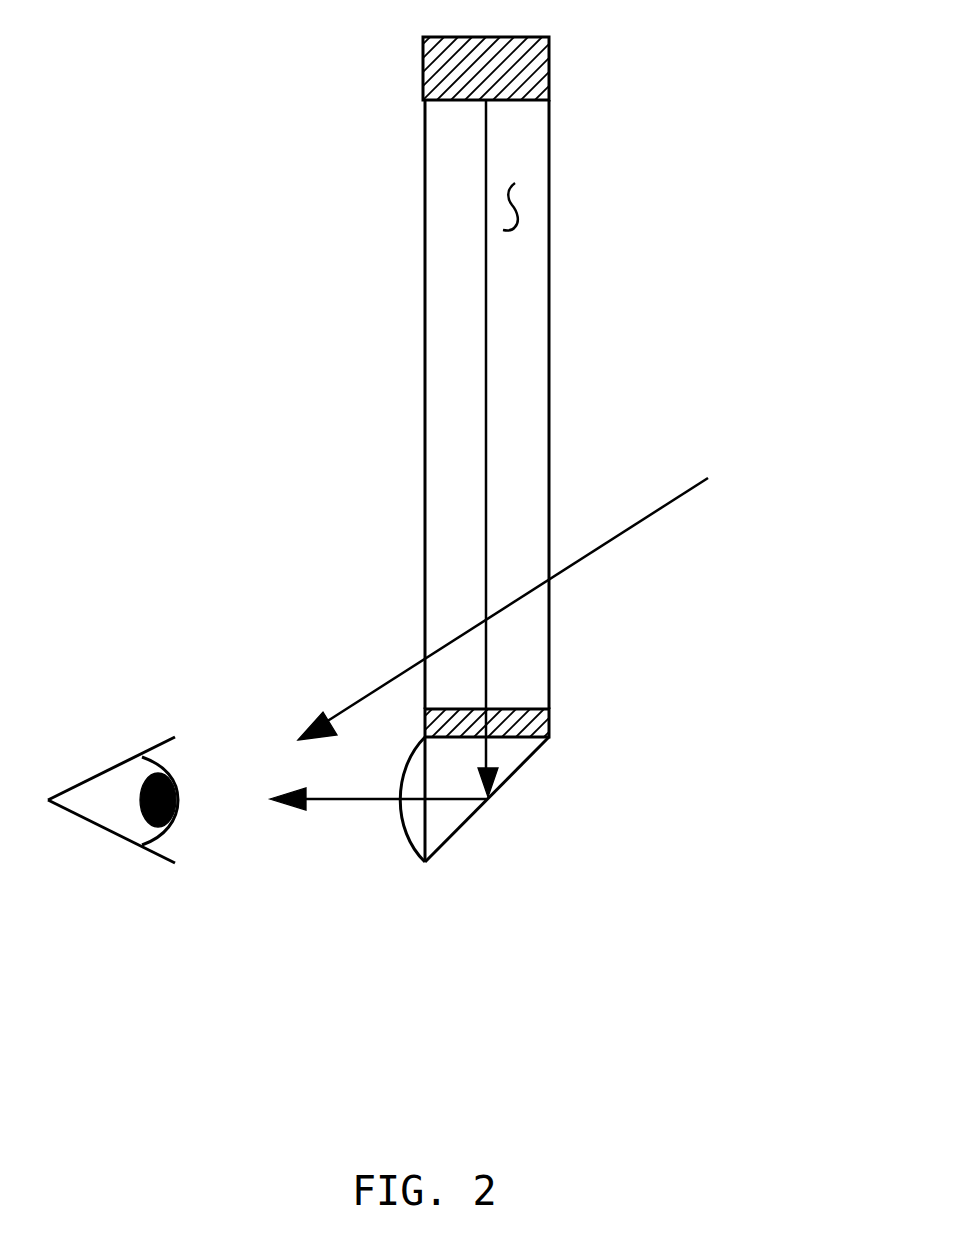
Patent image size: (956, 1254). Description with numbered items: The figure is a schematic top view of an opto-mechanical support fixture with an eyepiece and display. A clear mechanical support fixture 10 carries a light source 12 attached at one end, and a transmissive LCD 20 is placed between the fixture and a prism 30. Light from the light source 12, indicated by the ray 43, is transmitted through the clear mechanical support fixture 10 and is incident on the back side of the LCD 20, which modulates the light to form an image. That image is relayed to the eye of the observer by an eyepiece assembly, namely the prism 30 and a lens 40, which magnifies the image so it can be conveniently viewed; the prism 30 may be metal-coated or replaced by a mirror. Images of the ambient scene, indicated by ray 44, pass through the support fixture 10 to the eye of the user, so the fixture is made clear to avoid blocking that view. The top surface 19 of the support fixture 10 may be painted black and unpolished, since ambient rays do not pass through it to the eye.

The clear mechanical support fixture 10 is at (549, 402).
The light source 12 is at (513, 67).
The top surface 19 is at (525, 206).
The transmissive LCD 20 is at (549, 720).
The prism 30 is at (522, 767).
The lens 40 is at (395, 828).
The ray 43 is at (480, 539).
The ray 44 is at (613, 540).